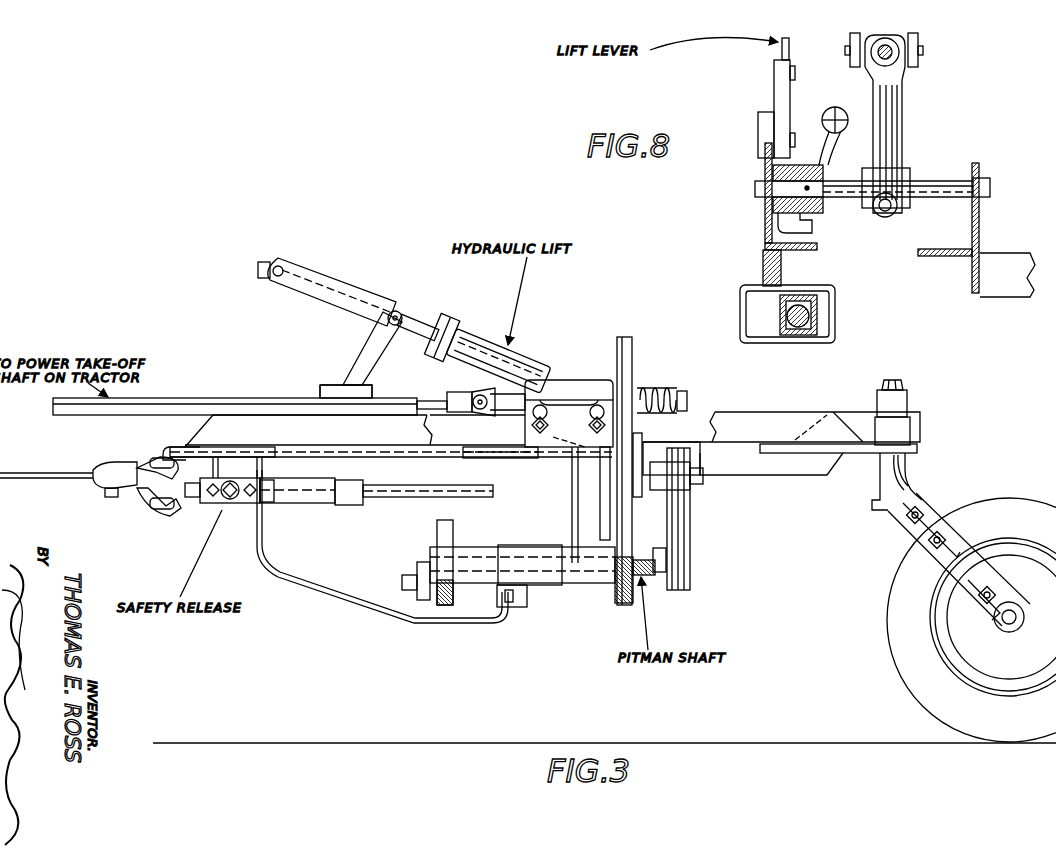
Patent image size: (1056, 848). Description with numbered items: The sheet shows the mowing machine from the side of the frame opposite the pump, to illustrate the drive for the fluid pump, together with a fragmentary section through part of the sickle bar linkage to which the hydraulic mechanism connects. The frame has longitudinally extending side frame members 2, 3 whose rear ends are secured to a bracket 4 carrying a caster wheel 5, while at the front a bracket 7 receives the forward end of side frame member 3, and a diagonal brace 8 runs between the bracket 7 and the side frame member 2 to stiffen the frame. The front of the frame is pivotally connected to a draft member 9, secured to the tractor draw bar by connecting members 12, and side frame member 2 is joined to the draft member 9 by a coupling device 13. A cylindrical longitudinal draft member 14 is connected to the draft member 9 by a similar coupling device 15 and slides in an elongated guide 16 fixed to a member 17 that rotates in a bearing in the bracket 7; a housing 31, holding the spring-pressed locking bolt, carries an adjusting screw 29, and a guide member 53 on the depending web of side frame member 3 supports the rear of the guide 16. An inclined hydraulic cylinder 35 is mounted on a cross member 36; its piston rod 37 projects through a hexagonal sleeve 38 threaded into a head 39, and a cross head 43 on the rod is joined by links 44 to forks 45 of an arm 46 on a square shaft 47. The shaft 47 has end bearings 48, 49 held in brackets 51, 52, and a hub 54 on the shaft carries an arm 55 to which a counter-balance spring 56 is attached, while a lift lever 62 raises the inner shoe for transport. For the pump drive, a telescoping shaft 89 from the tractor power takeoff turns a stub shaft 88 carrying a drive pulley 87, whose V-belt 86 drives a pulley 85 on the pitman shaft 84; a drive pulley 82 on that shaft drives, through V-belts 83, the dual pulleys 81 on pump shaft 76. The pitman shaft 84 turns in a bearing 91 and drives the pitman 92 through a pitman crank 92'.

In FIG. 3, the side frame member 2 is at (241, 413).
In FIG. 8, the side frame member 3 is at (806, 251).
In FIG. 3, the side frame member 3 is at (800, 462).
In FIG. 3, the bracket 4 is at (856, 412).
In FIG. 3, the caster wheel 5 is at (905, 621).
In FIG. 3, the bracket 7 is at (227, 457).
In FIG. 8, the diagonal brace 8 is at (1014, 262).
In FIG. 3, the diagonal brace 8 is at (465, 486).
In FIG. 3, the draft member 9 is at (103, 494).
In FIG. 3, the connecting members 12 is at (44, 473).
In FIG. 3, the coupling device 13 is at (116, 461).
In FIG. 8, the longitudinal draft member 14 is at (798, 328).
In FIG. 3, the longitudinal draft member 14 is at (396, 498).
In FIG. 3, the coupling device 15 is at (147, 506).
In FIG. 8, the guide 16 is at (779, 316).
In FIG. 3, the guide 16 is at (305, 505).
In FIG. 3, the member 17 is at (212, 502).
In FIG. 3, the adjusting screw 29 is at (236, 481).
In FIG. 3, the housing 31 is at (237, 497).
In FIG. 3, the hydraulic cylinder 35 is at (484, 333).
In FIG. 3, the cross member 36 is at (563, 466).
In FIG. 8, the piston rod 37 is at (878, 60).
In FIG. 3, the piston rod 37 is at (352, 300).
In FIG. 8, the sleeve 38 is at (905, 60).
In FIG. 3, the sleeve 38 is at (403, 316).
In FIG. 3, the head 39 is at (440, 330).
In FIG. 3, the cross head 43 is at (275, 258).
In FIG. 8, the links 44 is at (849, 38).
In FIG. 3, the links 44 is at (323, 278).
In FIG. 8, the forks 45 is at (886, 45).
In FIG. 3, the forks 45 is at (378, 322).
In FIG. 8, the arm 46 is at (903, 130).
In FIG. 3, the arm 46 is at (365, 350).
In FIG. 8, the square shaft 47 is at (936, 178).
In FIG. 8, the end bearing 48 is at (986, 179).
In FIG. 8, the end bearing 49 is at (754, 187).
In FIG. 8, the bracket 51 is at (980, 210).
In FIG. 8, the bracket 52 is at (764, 205).
In FIG. 8, the guide member 53 is at (740, 298).
In FIG. 3, the guide member 53 is at (352, 507).
In FIG. 8, the hub 54 is at (823, 207).
In FIG. 8, the arm 55 is at (832, 140).
In FIG. 8, the spring 56 is at (827, 112).
In FIG. 8, the lift lever 62 is at (773, 68).
In FIG. 3, the shaft 76 is at (704, 483).
In FIG. 3, the dual pulleys 81 is at (691, 508).
In FIG. 3, the drive pulley 82 is at (691, 588).
In FIG. 3, the V-belts 83 is at (683, 525).
In FIG. 3, the pitman shaft 84 is at (651, 578).
In FIG. 3, the pulley 85 is at (622, 605).
In FIG. 3, the V-belt 86 is at (626, 508).
In FIG. 3, the drive pulley 87 is at (628, 337).
In FIG. 3, the stub shaft 88 is at (514, 396).
In FIG. 3, the telescoping shaft 89 is at (200, 398).
In FIG. 3, the bearing 91 is at (543, 586).
In FIG. 3, the pitman 92 is at (382, 546).
In FIG. 3, the pitman crank 92' is at (433, 595).